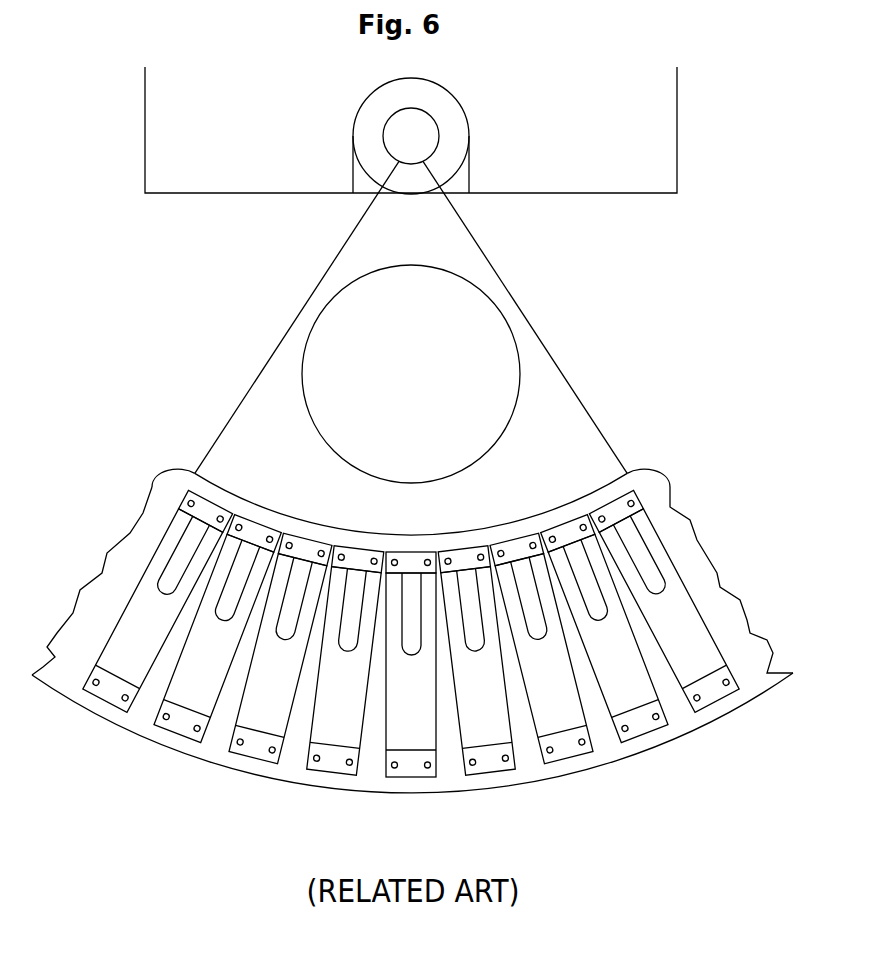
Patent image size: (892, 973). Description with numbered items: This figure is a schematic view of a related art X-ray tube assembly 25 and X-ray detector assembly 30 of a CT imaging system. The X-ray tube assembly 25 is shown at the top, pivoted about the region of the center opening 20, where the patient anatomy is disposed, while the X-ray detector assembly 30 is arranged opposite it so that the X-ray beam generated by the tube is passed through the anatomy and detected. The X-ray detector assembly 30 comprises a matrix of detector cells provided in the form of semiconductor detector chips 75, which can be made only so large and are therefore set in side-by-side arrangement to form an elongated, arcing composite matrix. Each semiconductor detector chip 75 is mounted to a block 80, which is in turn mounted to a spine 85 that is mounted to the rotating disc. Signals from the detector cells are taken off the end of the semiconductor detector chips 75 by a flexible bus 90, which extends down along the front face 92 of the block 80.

The center opening 20 is at (512, 337).
The X-ray tube assembly 25 is at (247, 204).
The X-ray detector assembly 30 is at (532, 507).
The semiconductor detector chips 75 is at (173, 507).
The block 80 is at (708, 618).
The spine 85 is at (682, 545).
The flexible bus 90 is at (167, 577).
The front face 92 is at (400, 731).